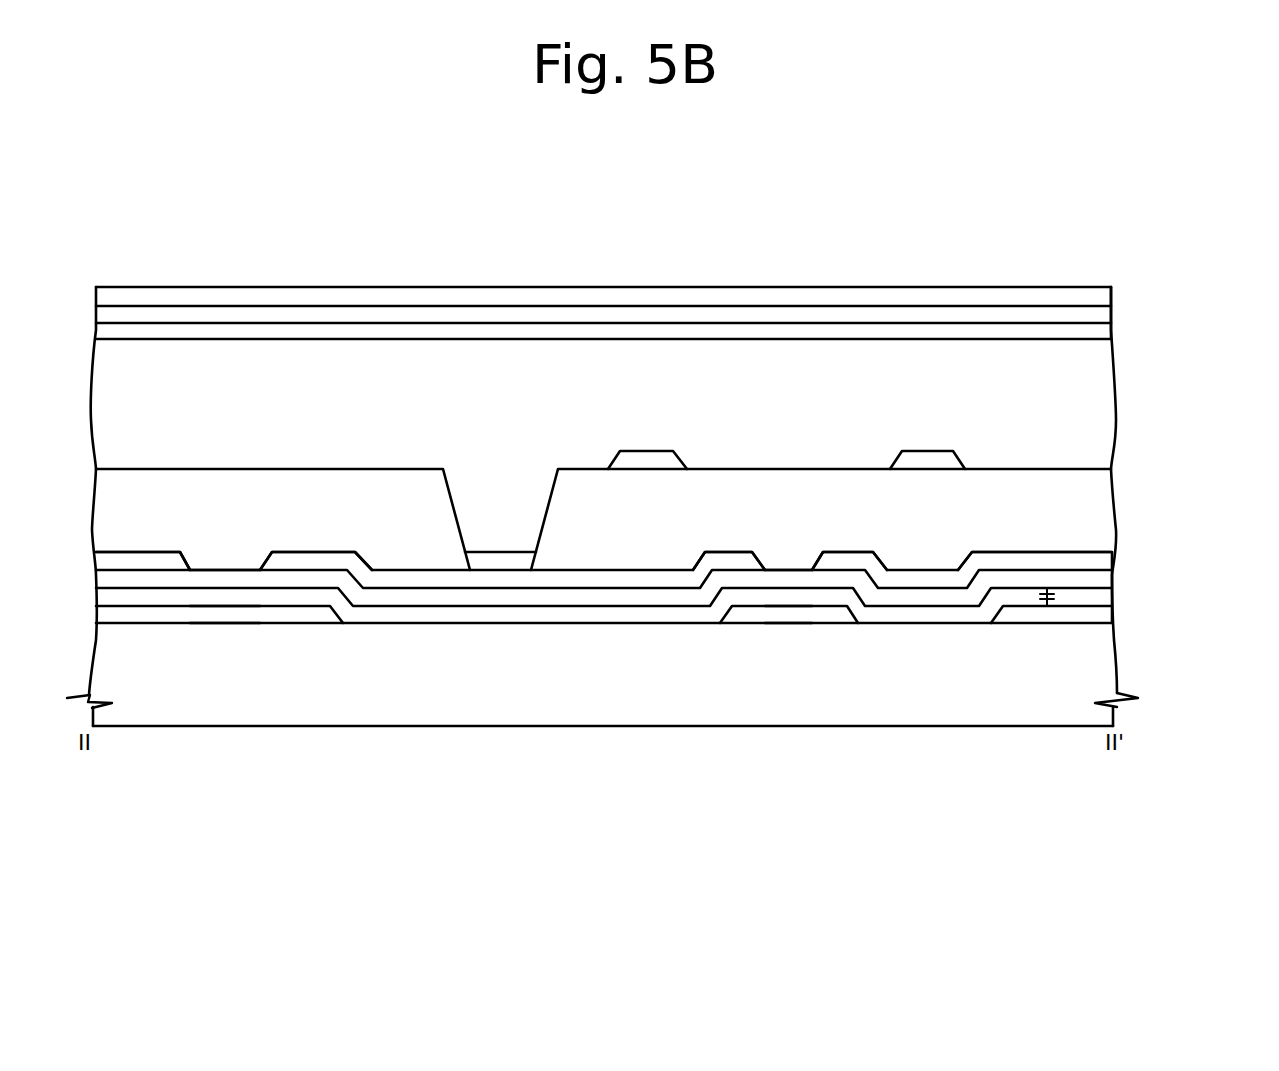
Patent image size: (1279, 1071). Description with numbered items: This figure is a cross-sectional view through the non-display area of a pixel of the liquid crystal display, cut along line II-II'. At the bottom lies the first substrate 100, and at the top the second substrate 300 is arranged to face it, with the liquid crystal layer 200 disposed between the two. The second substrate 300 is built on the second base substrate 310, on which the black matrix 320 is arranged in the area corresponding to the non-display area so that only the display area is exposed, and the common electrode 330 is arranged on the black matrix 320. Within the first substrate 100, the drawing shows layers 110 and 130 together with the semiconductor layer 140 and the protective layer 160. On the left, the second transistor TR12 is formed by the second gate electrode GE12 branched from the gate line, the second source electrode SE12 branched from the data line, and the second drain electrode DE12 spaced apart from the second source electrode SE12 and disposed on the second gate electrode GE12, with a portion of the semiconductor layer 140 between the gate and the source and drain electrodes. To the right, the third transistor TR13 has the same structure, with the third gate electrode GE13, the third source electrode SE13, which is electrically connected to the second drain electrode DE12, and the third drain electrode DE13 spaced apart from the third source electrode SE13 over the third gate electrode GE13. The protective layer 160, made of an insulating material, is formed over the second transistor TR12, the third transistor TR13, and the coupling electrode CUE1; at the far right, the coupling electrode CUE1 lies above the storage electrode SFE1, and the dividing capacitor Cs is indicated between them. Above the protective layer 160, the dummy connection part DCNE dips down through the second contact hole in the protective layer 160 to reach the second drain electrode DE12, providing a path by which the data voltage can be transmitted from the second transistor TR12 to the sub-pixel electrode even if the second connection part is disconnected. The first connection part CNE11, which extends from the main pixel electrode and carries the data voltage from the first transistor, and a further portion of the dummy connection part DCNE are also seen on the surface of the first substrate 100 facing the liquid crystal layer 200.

The second base substrate 310 is at (1097, 298).
The black matrix 320 is at (1094, 313).
The common electrode 330 is at (1094, 330).
The second substrate 300 is at (1207, 287).
The liquid crystal layer 200 is at (1096, 425).
The first connection part CNE11 is at (650, 462).
The dummy connection part DCNE is at (931, 462).
The protective layer 160 is at (1097, 542).
The semiconductor layer 140 is at (1097, 578).
The insulating layer 130 is at (1097, 602).
The base substrate 110 is at (1097, 657).
The first substrate 100 is at (1207, 528).
The dividing capacitor Cs is at (1032, 601).
The second source electrode SE12 is at (152, 562).
The second gate electrode GE12 is at (223, 614).
The second drain electrode DE12 is at (295, 562).
The second transistor TR12 is at (325, 782).
The third source electrode SE13 is at (713, 562).
The third gate electrode GE13 is at (785, 614).
The third drain electrode DE13 is at (857, 562).
The third transistor TR13 is at (885, 782).
The coupling electrode CUE1 is at (987, 562).
The storage electrode SFE1 is at (1057, 614).